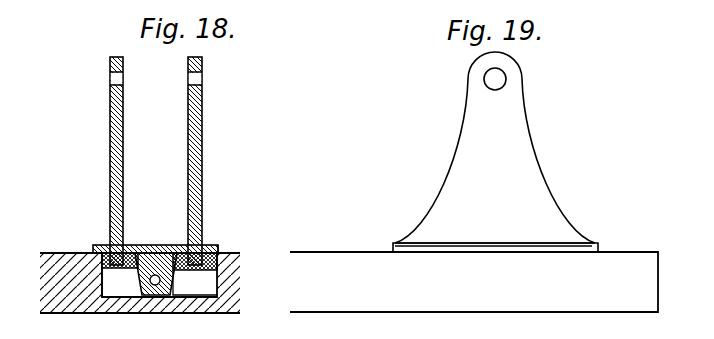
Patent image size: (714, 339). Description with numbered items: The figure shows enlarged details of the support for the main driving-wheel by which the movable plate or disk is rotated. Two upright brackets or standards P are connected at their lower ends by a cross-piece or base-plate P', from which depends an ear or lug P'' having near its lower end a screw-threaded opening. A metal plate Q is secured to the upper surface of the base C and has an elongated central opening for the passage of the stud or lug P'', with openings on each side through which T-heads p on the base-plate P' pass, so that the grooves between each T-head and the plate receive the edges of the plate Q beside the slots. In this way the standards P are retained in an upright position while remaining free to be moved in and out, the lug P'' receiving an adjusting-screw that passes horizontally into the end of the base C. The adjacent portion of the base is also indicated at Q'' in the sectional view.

In FIG. 18, the brackets or standards P is at (147, 161).
In FIG. 19, the brackets or standards P is at (495, 147).
In FIG. 18, the cross-piece or base-plate P' is at (155, 259).
In FIG. 19, the cross-piece or base-plate P' is at (508, 238).
In FIG. 18, the ear or lug P'' is at (186, 266).
In FIG. 18, the T-heads p is at (159, 282).
In FIG. 18, the metal plate Q is at (240, 240).
In FIG. 18, the bed groove Q'' is at (241, 319).
In FIG. 18, the base C is at (138, 283).
In FIG. 19, the base C is at (474, 282).